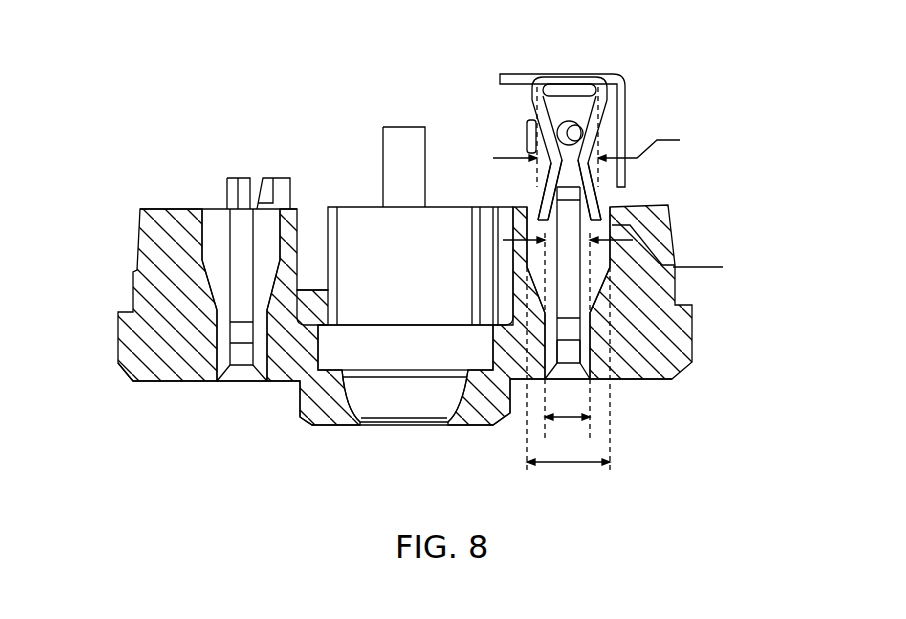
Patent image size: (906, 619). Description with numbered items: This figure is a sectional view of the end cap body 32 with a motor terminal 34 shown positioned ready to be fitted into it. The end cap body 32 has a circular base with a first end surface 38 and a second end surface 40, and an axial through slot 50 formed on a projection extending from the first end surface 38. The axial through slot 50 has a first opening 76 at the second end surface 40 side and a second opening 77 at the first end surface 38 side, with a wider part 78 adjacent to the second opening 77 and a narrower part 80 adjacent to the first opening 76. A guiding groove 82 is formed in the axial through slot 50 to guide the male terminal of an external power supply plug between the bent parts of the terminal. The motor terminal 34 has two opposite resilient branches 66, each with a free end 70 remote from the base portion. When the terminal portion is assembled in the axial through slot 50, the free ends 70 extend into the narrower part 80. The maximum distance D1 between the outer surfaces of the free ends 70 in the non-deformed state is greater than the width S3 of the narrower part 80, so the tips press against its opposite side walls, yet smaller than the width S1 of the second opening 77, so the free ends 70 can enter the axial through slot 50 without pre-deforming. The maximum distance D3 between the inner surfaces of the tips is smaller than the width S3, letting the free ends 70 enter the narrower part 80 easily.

The end cap body 32 is at (162, 267).
The motor terminal 34 is at (613, 82).
The first end surface 38 is at (168, 208).
The second end surface 40 is at (180, 383).
The axial through slot 50 is at (243, 262).
The resilient branch 66 is at (540, 110).
The free end 70 is at (547, 200).
The first opening 76 is at (237, 372).
The second opening 77 is at (598, 199).
The wider part 78 is at (612, 225).
The narrower part 80 is at (567, 348).
The guiding groove 82 is at (567, 303).
The maximum distance between outer surfaces of free ends D1 is at (600, 139).
The maximum distance between inner surfaces of tips D3 is at (613, 273).
The width of second opening S1 is at (568, 380).
The width of narrower part S3 is at (567, 414).